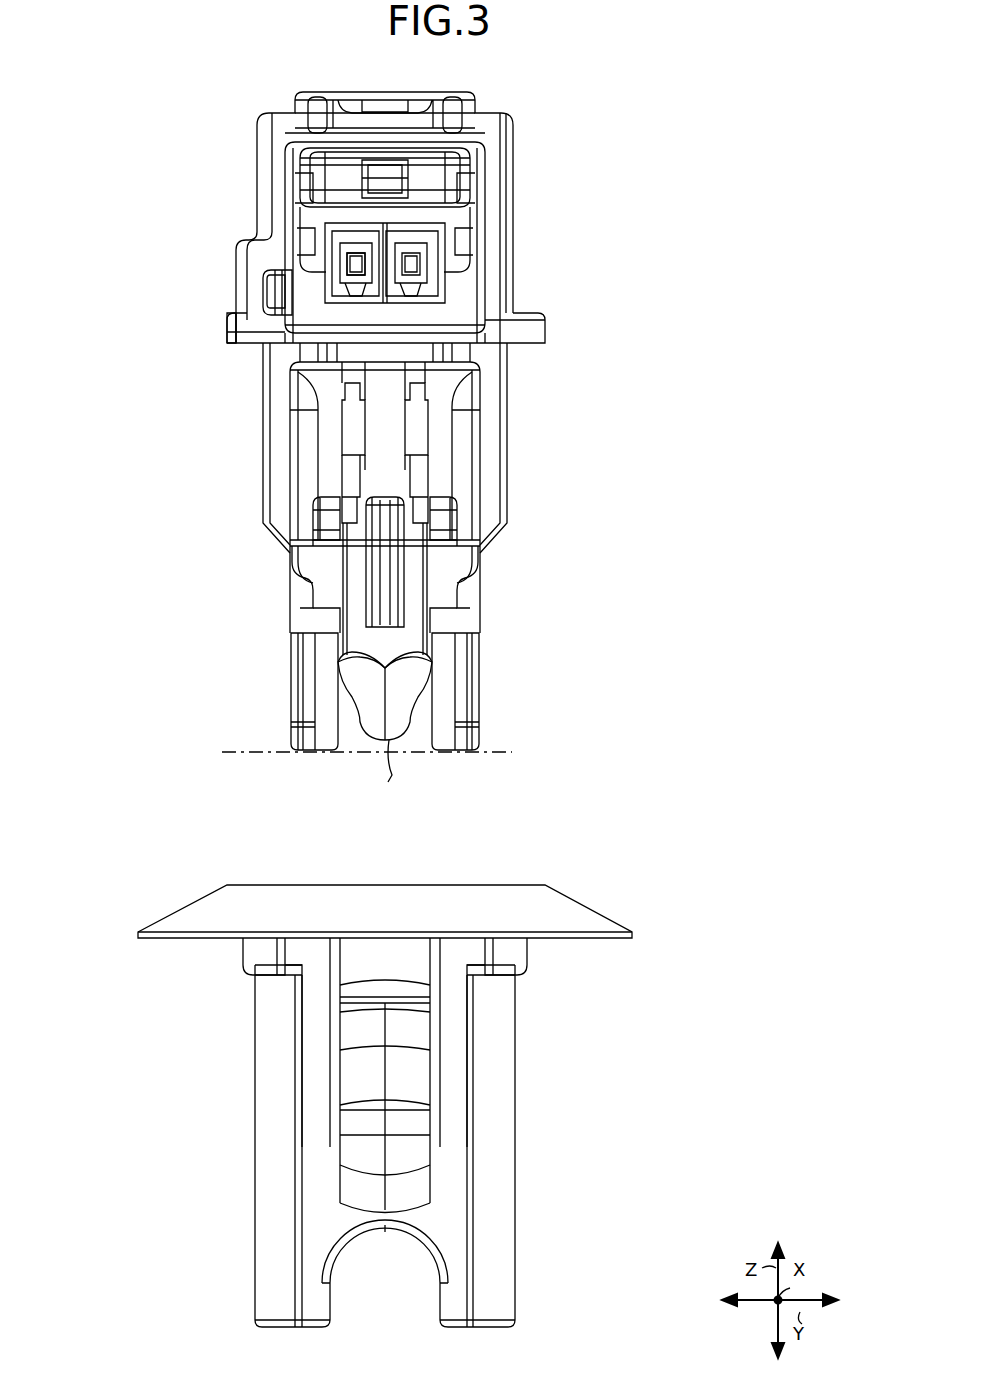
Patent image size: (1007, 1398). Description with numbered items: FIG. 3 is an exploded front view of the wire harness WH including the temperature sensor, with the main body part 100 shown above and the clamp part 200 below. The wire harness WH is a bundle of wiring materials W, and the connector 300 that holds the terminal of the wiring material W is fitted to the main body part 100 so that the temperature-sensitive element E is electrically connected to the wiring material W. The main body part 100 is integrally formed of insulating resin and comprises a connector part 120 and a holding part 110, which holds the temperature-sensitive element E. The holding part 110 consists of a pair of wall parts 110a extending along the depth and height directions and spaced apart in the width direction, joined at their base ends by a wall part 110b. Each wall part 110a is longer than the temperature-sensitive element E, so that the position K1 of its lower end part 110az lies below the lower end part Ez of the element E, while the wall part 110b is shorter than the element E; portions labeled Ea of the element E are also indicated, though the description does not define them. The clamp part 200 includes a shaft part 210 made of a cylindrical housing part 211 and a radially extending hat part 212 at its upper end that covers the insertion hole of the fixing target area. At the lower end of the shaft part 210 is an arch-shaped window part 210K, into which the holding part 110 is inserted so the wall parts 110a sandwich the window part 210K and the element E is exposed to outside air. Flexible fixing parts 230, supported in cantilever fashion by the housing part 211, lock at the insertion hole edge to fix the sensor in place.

The wire harness WH is at (178, 162).
The wiring material W is at (325, 270).
The connector 300 is at (280, 338).
The main body part 100 is at (477, 453).
The connector part 120 is at (520, 240).
The holding part 110 is at (430, 579).
The wall part 110a is at (298, 580).
The end part 110az is at (318, 750).
The wall part 110b is at (510, 440).
The contact portion Ea is at (420, 470).
The temperature-sensitive element E is at (330, 733).
The end part Ez is at (402, 777).
The position K1 is at (351, 753).
The clamp part 200 is at (442, 1099).
The shaft part 210 is at (447, 1116).
The hat part 212 is at (585, 920).
The housing part 211 is at (498, 1082).
The window part 210K is at (435, 1282).
The fixing part 230 is at (355, 1038).